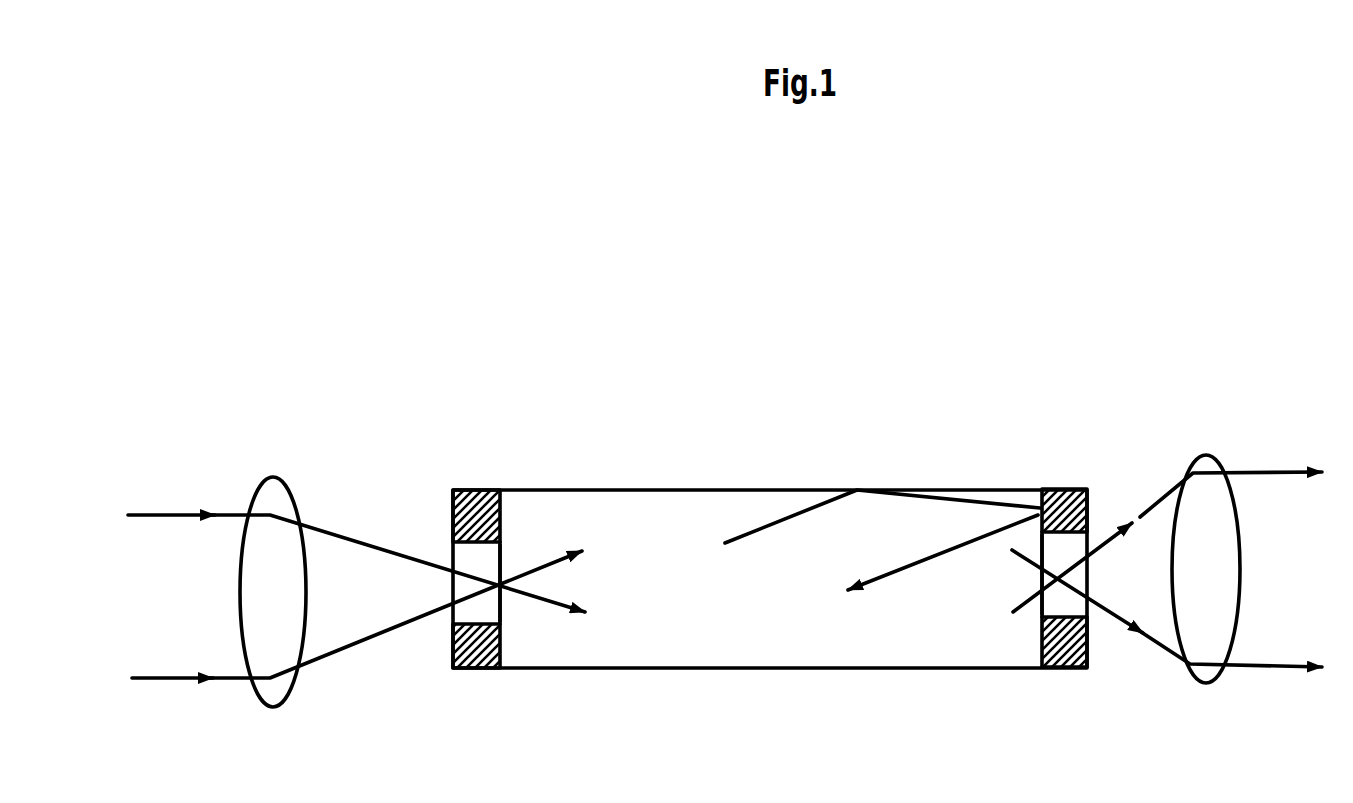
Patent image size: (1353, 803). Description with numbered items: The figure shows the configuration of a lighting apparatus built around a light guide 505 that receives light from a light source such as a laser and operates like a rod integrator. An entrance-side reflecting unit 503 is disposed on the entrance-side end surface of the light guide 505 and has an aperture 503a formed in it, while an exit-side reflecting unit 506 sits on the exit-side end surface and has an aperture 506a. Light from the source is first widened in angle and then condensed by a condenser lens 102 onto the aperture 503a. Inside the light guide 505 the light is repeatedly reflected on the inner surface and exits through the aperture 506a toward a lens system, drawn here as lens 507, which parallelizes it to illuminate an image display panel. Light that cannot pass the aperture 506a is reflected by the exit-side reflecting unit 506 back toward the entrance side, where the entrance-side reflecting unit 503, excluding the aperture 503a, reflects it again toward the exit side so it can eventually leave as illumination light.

The condenser lens 102 is at (272, 478).
The entrance-side reflecting unit 503 is at (502, 507).
The aperture 503a is at (462, 612).
The light guide 505 is at (742, 305).
The exit-side reflecting unit 506 is at (1038, 498).
The aperture 506a is at (1040, 604).
The output lens 507 is at (1207, 457).